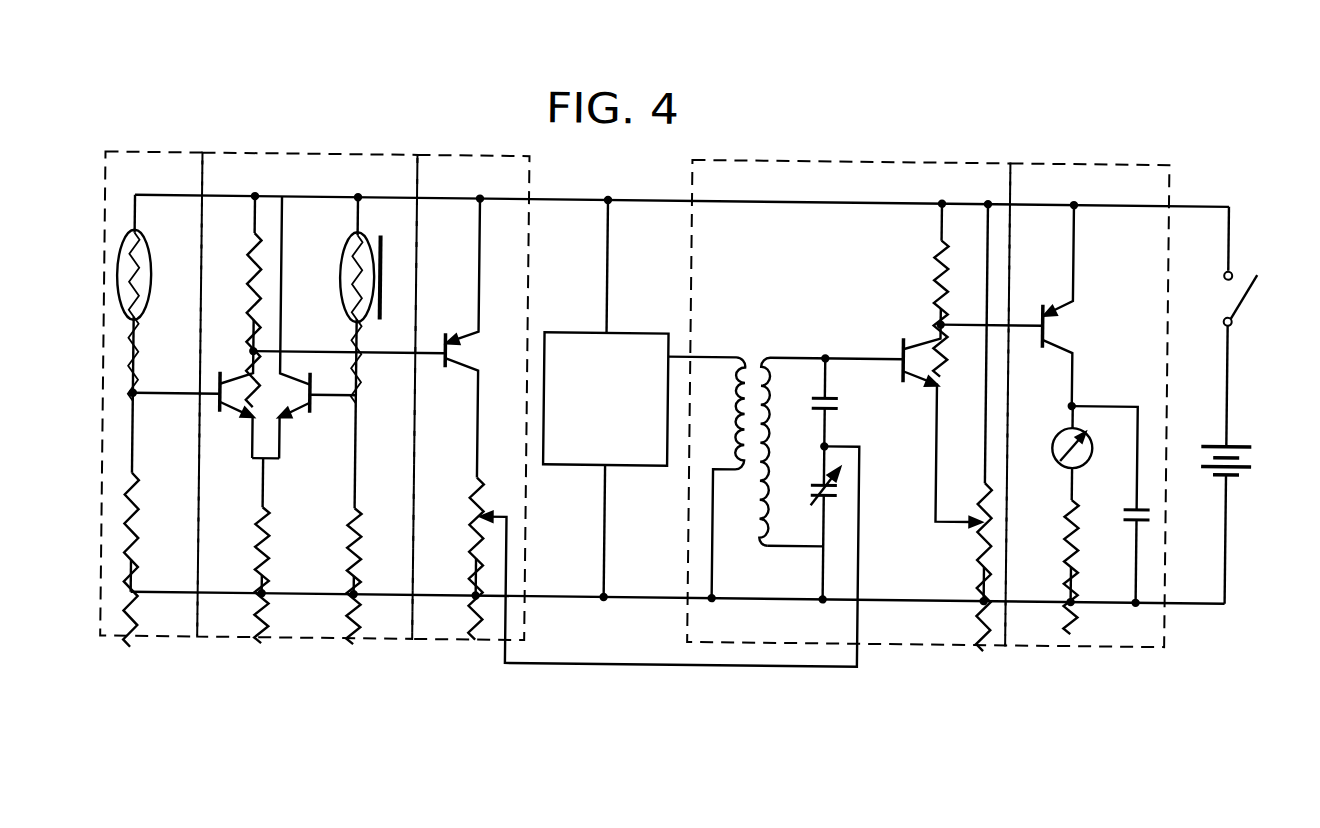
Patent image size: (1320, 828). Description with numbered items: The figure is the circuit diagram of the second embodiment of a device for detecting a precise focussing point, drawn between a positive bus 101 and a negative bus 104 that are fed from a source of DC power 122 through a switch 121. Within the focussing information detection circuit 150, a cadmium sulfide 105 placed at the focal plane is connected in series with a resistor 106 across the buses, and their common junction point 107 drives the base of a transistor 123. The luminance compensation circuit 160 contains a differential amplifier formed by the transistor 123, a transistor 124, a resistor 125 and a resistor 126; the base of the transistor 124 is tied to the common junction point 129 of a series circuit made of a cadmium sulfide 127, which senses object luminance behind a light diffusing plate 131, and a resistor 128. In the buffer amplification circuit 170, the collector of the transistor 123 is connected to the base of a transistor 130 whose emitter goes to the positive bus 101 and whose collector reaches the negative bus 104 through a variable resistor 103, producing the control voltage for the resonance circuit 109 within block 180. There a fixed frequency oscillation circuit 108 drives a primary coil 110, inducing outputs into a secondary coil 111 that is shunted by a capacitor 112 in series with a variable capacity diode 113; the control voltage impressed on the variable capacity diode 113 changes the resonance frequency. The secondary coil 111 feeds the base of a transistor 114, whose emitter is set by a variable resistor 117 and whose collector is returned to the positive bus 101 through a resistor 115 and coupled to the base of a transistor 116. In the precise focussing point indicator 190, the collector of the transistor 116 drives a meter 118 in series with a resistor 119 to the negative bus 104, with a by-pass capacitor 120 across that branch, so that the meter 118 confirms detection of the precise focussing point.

The positive bus 101 is at (810, 200).
The variable resistor 103 is at (511, 515).
The negative bus 104 is at (1020, 600).
The cadmium sulfide 105 is at (134, 238).
The resistor 106 is at (145, 518).
The common junction point 107 is at (135, 398).
The fixed frequency oscillation circuit 108 is at (617, 333).
The resonance circuit 109 is at (767, 345).
The primary coil 110 is at (741, 464).
The secondary coil 111 is at (765, 540).
The capacitor 112 is at (840, 403).
The variable capacity diode 113 is at (841, 489).
The transistor 114 is at (903, 345).
The resistor 115 is at (940, 284).
The transistor 116 is at (1047, 332).
The variable resistor 117 is at (984, 556).
The meter 118 is at (1068, 462).
The resistor 119 is at (1073, 557).
The by-pass capacitor 120 is at (1138, 522).
The switch 121 is at (1234, 318).
The source of DC power 122 is at (1233, 470).
The transistor 123 is at (222, 414).
The transistor 124 is at (312, 414).
The resistor 125 is at (251, 278).
The resistor 126 is at (271, 535).
The cadmium sulfide 127 is at (349, 242).
The resistor 128 is at (361, 542).
The common junction point 129 is at (358, 397).
The transistor 130 is at (445, 338).
The light diffusing plate 131 is at (384, 258).
The focussing information detection circuit 150 is at (110, 157).
The luminance compensation circuit 160 is at (232, 157).
The buffer amplification circuit 170 is at (408, 157).
The resonance circuit 180 is at (905, 159).
The precise focussing point indicator 190 is at (1043, 159).